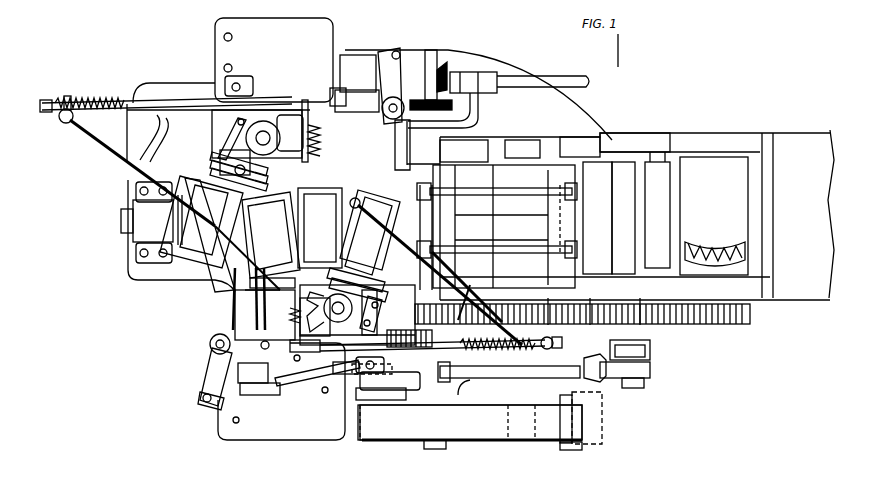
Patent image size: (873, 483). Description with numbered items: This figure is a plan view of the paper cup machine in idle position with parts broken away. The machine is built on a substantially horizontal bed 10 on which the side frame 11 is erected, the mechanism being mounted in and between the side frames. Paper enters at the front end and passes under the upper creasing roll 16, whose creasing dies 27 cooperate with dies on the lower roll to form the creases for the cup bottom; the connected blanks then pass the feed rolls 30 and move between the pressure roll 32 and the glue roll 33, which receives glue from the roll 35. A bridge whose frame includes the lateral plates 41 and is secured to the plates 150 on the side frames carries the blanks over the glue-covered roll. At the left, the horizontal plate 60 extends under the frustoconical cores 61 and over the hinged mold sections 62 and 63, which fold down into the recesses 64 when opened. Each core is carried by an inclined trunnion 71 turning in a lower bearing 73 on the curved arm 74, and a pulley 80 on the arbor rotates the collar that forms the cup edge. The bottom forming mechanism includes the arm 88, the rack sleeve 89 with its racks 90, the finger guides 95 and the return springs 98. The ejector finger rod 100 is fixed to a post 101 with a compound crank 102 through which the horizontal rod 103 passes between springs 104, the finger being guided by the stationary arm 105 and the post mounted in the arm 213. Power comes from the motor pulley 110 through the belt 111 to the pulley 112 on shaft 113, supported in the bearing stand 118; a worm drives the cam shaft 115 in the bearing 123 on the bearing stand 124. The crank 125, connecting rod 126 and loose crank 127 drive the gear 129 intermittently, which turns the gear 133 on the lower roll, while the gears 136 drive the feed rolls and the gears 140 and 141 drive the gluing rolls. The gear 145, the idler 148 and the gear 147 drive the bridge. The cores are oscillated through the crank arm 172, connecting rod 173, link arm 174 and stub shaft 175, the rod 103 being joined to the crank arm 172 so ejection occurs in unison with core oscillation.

The bed 10 is at (186, 276).
The side frame 11 is at (528, 158).
The upper creasing roll 16 is at (736, 172).
The creasing dies 27 is at (724, 245).
The feed rolls 30 is at (657, 210).
The pressure roll 32 is at (609, 218).
The glue roll 33 is at (588, 155).
The roll 35 is at (497, 215).
The lateral plates 41 is at (500, 191).
The horizontal plate 60 is at (205, 200).
The cores 61 is at (220, 192).
The hinged mold section 62 is at (318, 202).
The hinged mold section 63 is at (368, 203).
The recesses 64 is at (272, 274).
The trunnion 71 is at (263, 128).
The lower bearing 73 is at (412, 282).
The curved arm 74 is at (285, 122).
The pulley 80 is at (218, 158).
The arm 88 is at (360, 62).
The rack sleeve 89 is at (272, 388).
The racks 90 is at (402, 96).
The guides 95 is at (232, 277).
The springs 98 is at (203, 393).
The finger rod 100 is at (108, 148).
The post 101 is at (65, 124).
The compound crank 102 is at (69, 100).
The horizontal rod 103 is at (151, 97).
The spring 104 is at (52, 100).
The stationary arm 105 is at (188, 178).
The motor pulley 110 is at (568, 432).
The belt 111 is at (518, 442).
The pulley 112 is at (452, 446).
The shaft 113 is at (434, 450).
The cam shaft 115 is at (124, 228).
The bearing stand 118 is at (423, 143).
The bearing 123 is at (142, 236).
The bearing stand 124 is at (152, 264).
The crank 125 is at (398, 370).
The connecting rod 126 is at (494, 372).
The crank 127 is at (650, 355).
The gear 129 is at (690, 340).
The gear 133 is at (730, 330).
The gears 136 is at (655, 325).
The gear 140 is at (606, 325).
The gear 141 is at (565, 307).
The gear 145 is at (445, 275).
The gear 147 is at (384, 314).
The idler 148 is at (455, 302).
The plates 150 is at (488, 150).
The crank arm 172 is at (224, 85).
The connecting rod 173 is at (320, 118).
The link arm 174 is at (425, 90).
The stub shaft 175 is at (196, 345).
The arm 213 is at (127, 112).